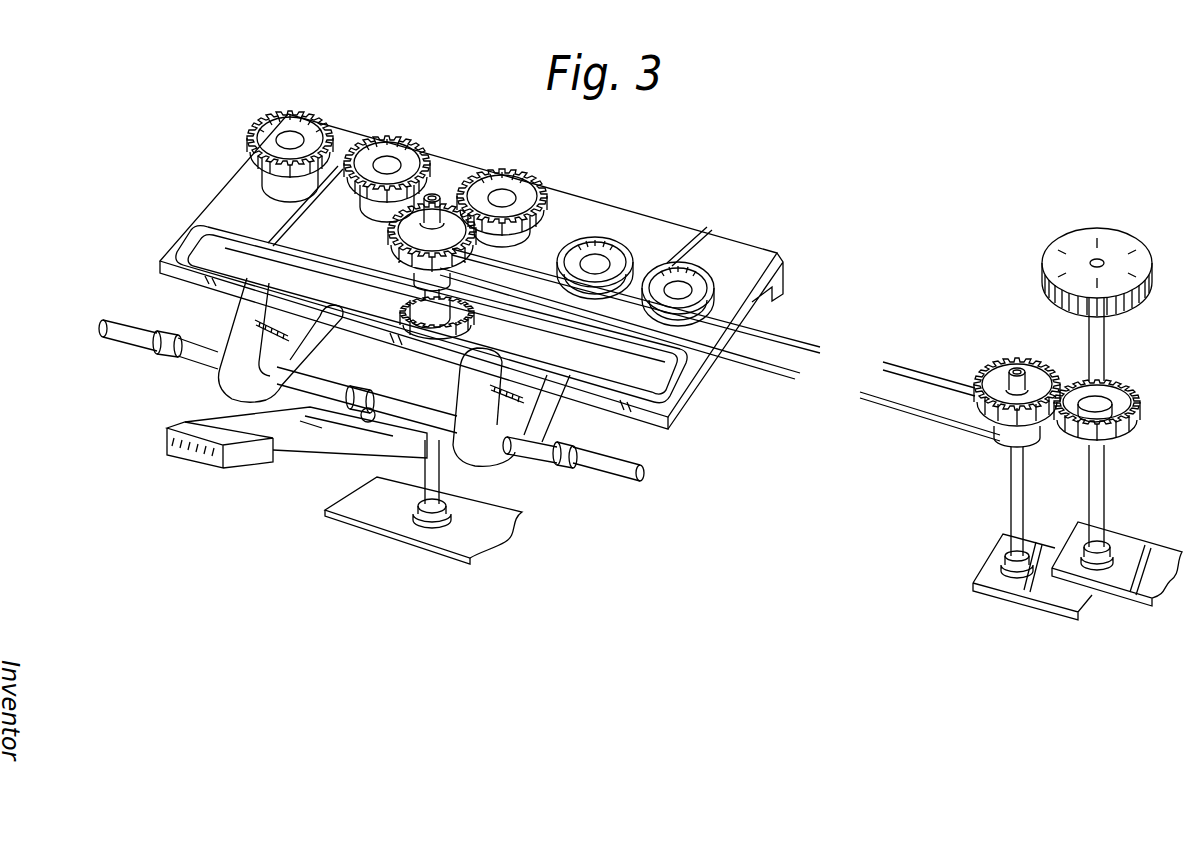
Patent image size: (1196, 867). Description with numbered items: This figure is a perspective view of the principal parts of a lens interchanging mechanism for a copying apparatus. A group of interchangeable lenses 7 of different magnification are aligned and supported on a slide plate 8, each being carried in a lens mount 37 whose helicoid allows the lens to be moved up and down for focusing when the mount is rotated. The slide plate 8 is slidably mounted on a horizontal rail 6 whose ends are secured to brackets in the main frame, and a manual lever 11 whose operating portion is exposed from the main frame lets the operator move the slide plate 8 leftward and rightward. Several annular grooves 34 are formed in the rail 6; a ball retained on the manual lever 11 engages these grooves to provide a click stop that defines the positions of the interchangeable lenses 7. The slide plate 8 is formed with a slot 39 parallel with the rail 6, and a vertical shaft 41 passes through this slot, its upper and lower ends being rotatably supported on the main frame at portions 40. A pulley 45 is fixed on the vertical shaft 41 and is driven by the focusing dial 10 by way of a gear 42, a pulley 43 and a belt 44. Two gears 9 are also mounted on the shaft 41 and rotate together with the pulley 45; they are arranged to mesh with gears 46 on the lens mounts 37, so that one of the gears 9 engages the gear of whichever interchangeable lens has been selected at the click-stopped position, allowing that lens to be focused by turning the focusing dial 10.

The rail 6 is at (620, 484).
The interchangeable lens 7 is at (303, 142).
The slide plate 8 is at (723, 240).
The gear 9 is at (392, 233).
The focusing dial 10 is at (1055, 252).
The manual lever 11 is at (302, 452).
The annular groove 34 is at (172, 354).
The lens mount 37 is at (270, 186).
The slot 39 is at (592, 367).
The supporting portion of the main frame 40 is at (480, 532).
The vertical shaft 41 is at (440, 481).
The gear 42 is at (1133, 401).
The pulley 43 is at (1003, 442).
The belt 44 is at (902, 402).
The pulley 45 is at (410, 278).
The gear 46 is at (333, 160).